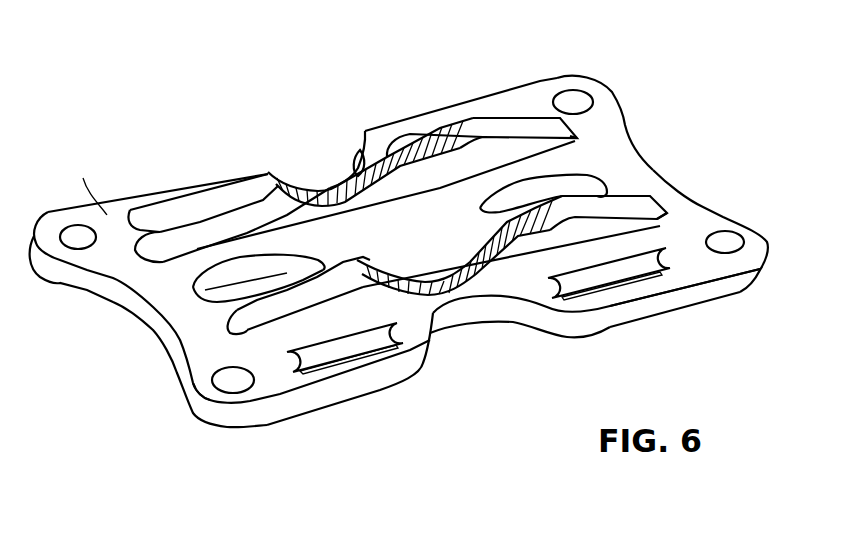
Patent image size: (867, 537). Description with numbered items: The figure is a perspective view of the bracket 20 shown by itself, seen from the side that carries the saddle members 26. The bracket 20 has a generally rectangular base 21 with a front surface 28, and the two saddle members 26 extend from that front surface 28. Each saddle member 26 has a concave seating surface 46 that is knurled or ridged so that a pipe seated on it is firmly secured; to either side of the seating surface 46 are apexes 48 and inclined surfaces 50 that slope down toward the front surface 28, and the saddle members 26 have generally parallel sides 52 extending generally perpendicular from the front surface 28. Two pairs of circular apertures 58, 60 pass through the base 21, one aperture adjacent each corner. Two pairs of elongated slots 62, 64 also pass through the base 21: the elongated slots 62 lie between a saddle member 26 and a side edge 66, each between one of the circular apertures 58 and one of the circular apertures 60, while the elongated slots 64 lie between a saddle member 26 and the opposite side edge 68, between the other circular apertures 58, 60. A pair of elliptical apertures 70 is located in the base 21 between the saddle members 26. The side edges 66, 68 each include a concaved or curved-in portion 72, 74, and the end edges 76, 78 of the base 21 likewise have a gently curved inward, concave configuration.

The bracket 20 is at (657, 48).
The base 21 is at (710, 220).
The saddle members 26 is at (579, 140).
The front surface 28 is at (87, 180).
The concave seating surface 46 is at (272, 178).
The apexes 48 is at (241, 198).
The inclined surfaces 50 is at (197, 217).
The sides 52 is at (173, 233).
The circular apertures 58 is at (77, 237).
The circular apertures 60 is at (573, 102).
The elongated slots 62 is at (145, 215).
The elongated slots 64 is at (388, 352).
The side edge 66 is at (367, 128).
The side edge 68 is at (309, 402).
The elliptical apertures 70 is at (592, 186).
The concaved portion 72 is at (353, 167).
The concaved portion 74 is at (542, 324).
The end edge 76 is at (73, 272).
The end edge 78 is at (623, 118).